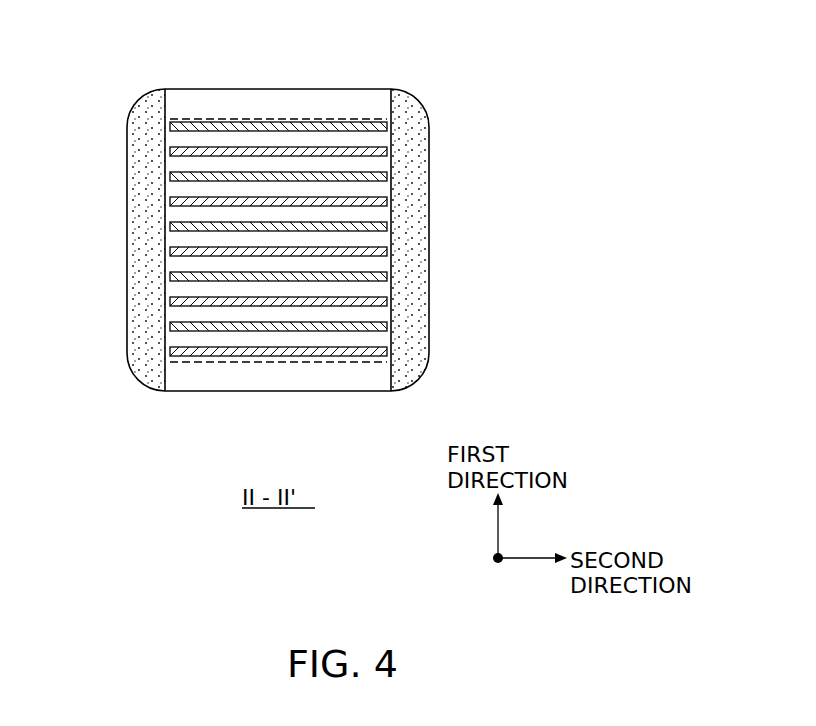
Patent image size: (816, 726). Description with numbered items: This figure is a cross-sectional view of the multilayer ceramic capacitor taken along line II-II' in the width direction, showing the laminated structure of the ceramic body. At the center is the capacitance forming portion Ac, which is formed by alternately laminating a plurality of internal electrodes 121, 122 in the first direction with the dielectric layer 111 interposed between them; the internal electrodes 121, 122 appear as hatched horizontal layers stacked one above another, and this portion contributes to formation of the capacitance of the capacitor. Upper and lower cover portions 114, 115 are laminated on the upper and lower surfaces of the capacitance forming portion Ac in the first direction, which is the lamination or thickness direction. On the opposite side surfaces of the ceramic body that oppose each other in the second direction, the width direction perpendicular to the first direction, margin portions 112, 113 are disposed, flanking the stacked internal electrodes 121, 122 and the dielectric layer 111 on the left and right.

The dielectric layer 111 is at (207, 142).
The margin portion 112 is at (140, 250).
The margin portion 113 is at (407, 233).
The upper cover portion 114 is at (245, 108).
The lower cover portion 115 is at (245, 373).
The internal electrode 121 is at (387, 125).
The internal electrode 122 is at (387, 150).
The capacitance forming portion Ac is at (410, 322).